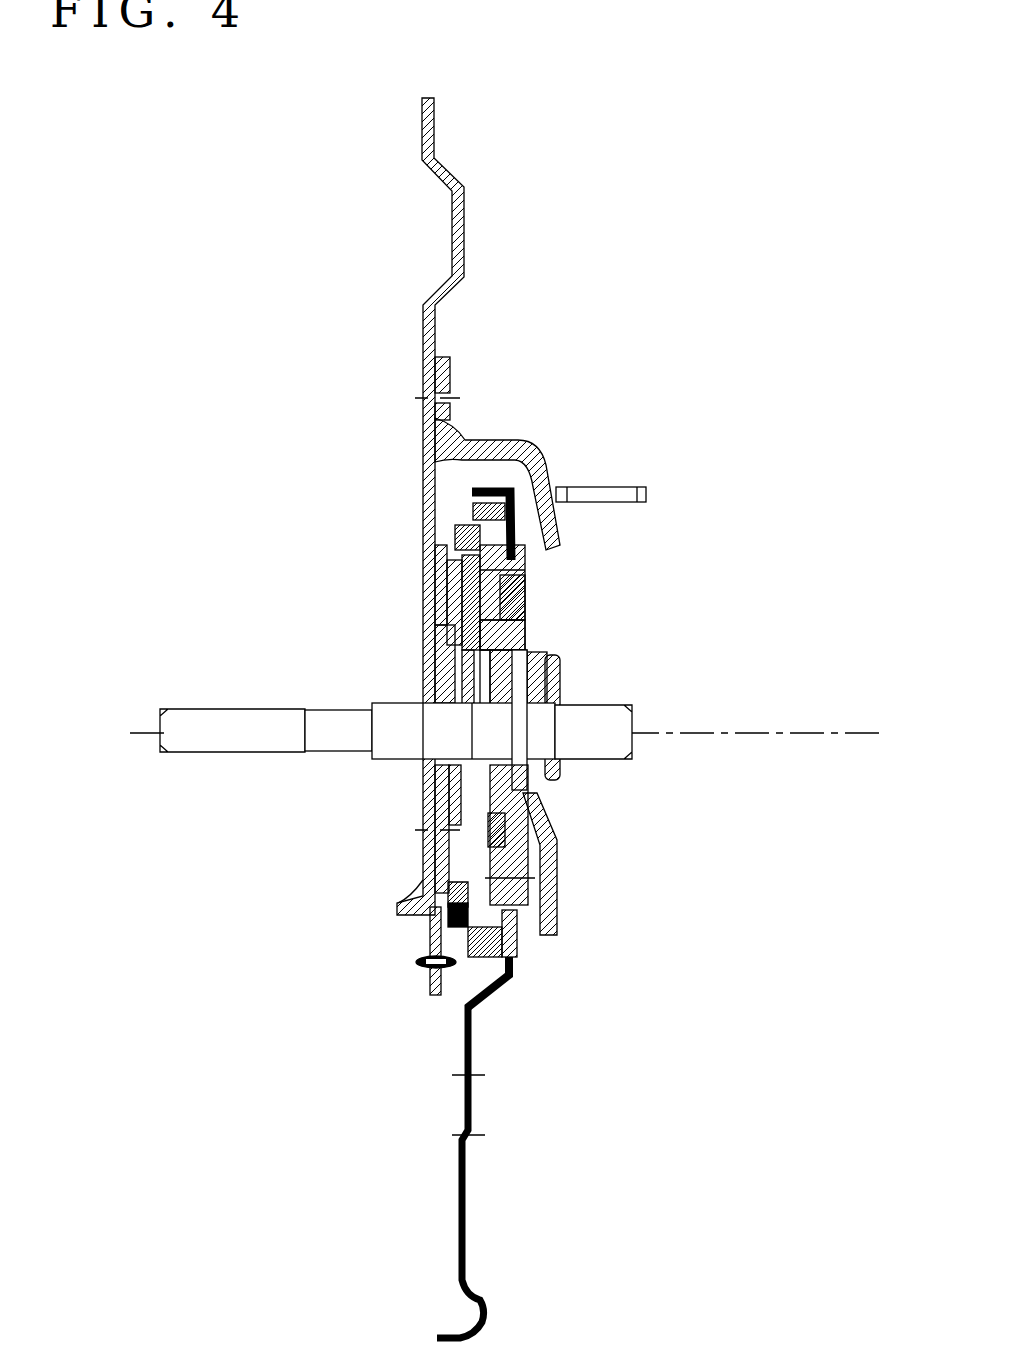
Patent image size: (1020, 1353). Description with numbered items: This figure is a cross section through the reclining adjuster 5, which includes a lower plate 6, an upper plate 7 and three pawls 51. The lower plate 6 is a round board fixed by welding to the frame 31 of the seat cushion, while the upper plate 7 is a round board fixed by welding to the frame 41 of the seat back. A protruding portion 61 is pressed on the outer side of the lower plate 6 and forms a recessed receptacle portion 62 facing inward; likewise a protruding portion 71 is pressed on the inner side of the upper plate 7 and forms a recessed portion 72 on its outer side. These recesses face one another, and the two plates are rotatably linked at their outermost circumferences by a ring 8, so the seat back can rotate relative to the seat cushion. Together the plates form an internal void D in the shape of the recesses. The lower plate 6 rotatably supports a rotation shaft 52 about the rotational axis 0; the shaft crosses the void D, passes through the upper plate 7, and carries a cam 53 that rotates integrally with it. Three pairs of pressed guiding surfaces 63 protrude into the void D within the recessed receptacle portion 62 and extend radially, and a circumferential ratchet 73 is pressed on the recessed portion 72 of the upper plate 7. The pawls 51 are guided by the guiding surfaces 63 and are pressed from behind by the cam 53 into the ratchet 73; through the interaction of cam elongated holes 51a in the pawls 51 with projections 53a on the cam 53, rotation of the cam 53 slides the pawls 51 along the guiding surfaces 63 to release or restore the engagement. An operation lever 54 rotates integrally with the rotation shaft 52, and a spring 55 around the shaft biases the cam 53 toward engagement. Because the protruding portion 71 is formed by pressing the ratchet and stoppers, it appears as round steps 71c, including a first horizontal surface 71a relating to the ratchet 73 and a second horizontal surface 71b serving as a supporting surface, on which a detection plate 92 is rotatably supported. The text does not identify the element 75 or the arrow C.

The frame 41 is at (420, 300).
The reclining adjuster 5 is at (262, 427).
The first horizontal surface 71a is at (450, 560).
The bracket 75 is at (517, 445).
The second horizontal surface 71b is at (420, 540).
The circumferential ratchet 73 is at (420, 585).
The cam elongated holes 51a is at (420, 610).
The upper plate 7 is at (405, 620).
The projections 53a is at (420, 645).
The protruding portion 71 is at (420, 668).
The lower plate 6 is at (530, 565).
The pawls 51 is at (522, 595).
The guiding surfaces 63 is at (522, 605).
The recessed receptacle portion 62 is at (525, 640).
The spring 55 is at (555, 668).
The rotation shaft 52 is at (607, 727).
The cam 53 is at (540, 778).
The recessed portion 72 is at (423, 812).
The protruding portion 61 is at (525, 855).
The operation lever 54 is at (560, 903).
The round steps 71c is at (428, 925).
The detection plate 92 is at (428, 985).
The ring 8 is at (487, 958).
The frame 31 is at (472, 1135).
The direction C is at (118, 729).
The internal void D is at (460, 845).
The rotational axis 0 is at (890, 734).